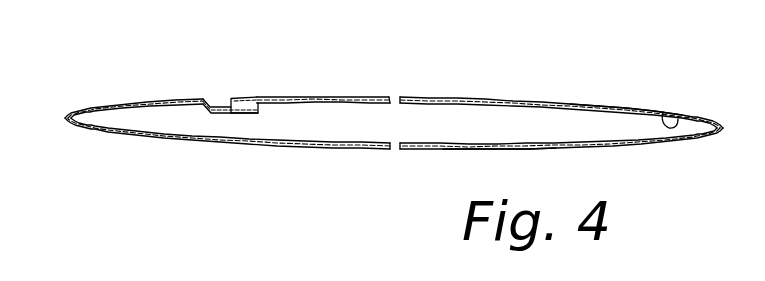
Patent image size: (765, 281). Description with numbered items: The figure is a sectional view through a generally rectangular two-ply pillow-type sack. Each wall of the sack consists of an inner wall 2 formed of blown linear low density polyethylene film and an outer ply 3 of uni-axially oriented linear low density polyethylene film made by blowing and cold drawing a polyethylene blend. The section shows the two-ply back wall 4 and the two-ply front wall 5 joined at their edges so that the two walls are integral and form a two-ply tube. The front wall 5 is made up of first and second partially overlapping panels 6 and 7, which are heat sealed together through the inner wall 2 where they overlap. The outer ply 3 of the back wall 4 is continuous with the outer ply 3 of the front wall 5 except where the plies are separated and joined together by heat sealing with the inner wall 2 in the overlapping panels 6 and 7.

The inner wall 2 is at (680, 132).
The outer ply 3 is at (623, 107).
The back wall 4 is at (323, 147).
The front wall 5 is at (370, 97).
The first partially overlapping panel 6 is at (218, 98).
The second partially overlapping panel 7 is at (242, 112).